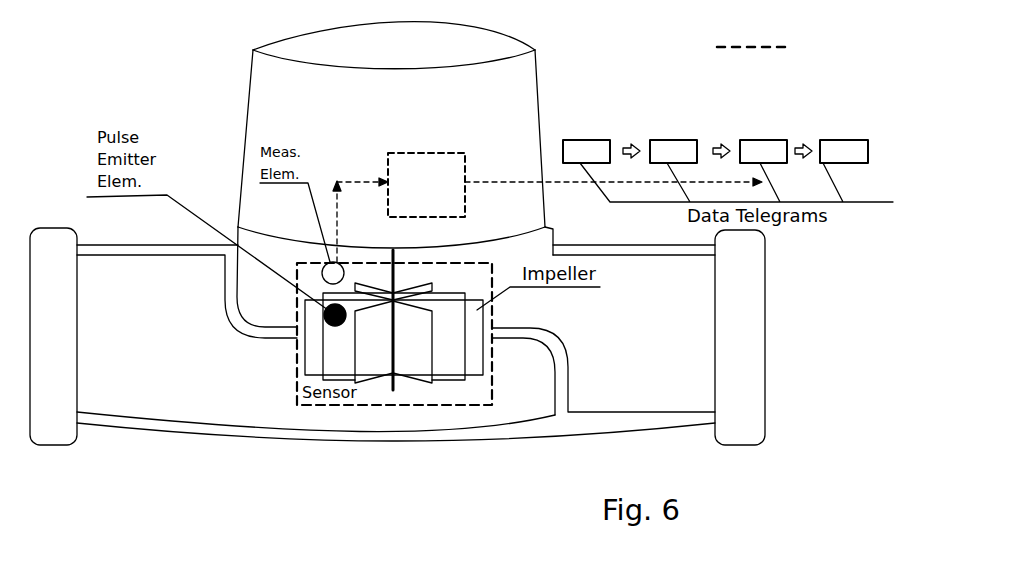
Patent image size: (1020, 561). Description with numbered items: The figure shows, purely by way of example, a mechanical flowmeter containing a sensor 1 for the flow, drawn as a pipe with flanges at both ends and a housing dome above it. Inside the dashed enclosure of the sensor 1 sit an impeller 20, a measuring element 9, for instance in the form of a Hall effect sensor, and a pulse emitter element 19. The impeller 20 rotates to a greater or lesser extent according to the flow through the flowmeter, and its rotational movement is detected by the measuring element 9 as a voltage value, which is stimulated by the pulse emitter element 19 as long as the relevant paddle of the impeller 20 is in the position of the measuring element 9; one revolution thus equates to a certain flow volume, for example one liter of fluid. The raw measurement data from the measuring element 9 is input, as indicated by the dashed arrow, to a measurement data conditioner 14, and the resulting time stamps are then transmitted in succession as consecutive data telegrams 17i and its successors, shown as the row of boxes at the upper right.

The sensor 1 is at (328, 405).
The measuring element 9 is at (326, 264).
The measurement data conditioner 14 is at (405, 165).
The pulse emitter element 19 is at (330, 322).
The impeller 20 is at (450, 368).
The data telegram 17i is at (572, 140).